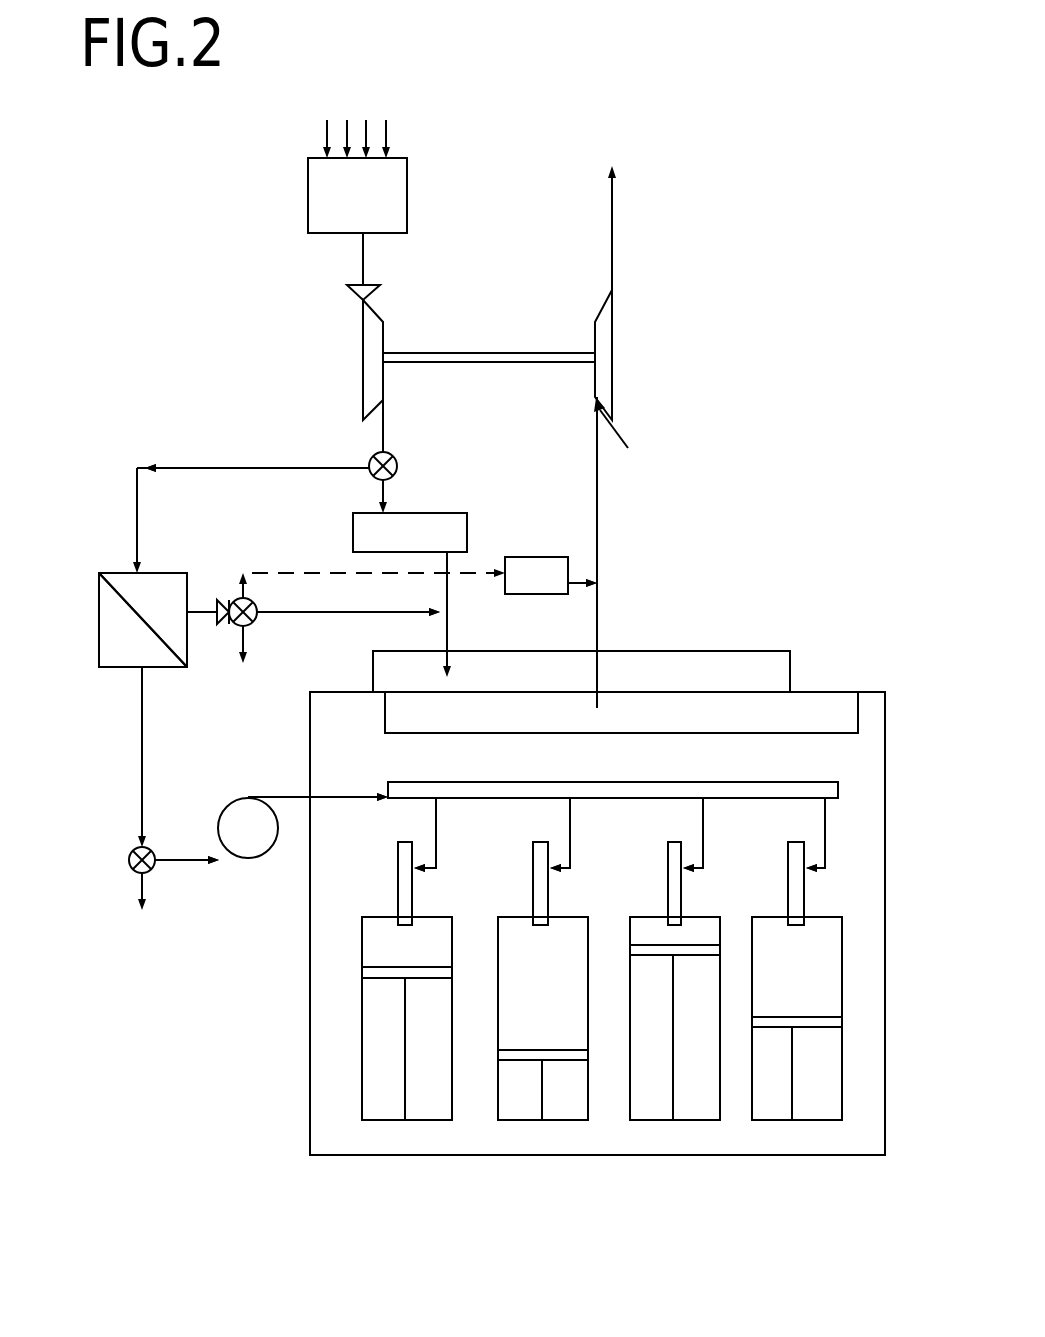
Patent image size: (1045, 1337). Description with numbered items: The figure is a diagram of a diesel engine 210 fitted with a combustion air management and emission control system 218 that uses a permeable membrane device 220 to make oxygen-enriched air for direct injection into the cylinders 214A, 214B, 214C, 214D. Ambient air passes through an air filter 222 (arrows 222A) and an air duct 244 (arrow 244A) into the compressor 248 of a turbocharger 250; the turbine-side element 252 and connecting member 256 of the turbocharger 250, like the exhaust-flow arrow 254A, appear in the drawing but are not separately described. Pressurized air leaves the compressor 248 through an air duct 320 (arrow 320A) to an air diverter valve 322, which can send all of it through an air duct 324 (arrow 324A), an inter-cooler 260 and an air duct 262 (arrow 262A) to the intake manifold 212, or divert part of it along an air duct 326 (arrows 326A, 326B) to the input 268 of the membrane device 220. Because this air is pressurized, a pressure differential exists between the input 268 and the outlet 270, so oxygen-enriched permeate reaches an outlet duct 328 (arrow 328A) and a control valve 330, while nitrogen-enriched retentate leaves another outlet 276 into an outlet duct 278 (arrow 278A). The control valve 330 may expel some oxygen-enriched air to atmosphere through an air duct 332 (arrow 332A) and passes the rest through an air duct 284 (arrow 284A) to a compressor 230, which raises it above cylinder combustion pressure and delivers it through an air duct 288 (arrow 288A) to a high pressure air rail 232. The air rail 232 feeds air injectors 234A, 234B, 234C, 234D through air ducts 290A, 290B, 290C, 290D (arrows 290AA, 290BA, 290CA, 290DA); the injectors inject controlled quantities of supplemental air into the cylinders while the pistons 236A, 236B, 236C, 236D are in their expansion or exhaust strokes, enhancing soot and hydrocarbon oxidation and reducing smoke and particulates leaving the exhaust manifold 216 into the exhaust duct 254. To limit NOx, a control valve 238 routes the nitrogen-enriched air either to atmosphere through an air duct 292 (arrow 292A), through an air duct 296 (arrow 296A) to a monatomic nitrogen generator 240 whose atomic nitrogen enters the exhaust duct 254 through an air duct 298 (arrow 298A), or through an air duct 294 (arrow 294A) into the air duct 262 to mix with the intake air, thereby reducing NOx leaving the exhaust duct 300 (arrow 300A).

The diesel engine 210 is at (311, 1105).
The intake manifold 212 is at (757, 660).
The cylinder 214A is at (432, 1120).
The cylinder 214B is at (572, 1120).
The cylinder 214C is at (695, 1120).
The cylinder 214D is at (812, 1120).
The exhaust manifold 216 is at (812, 706).
The combustion air management and emission control system 218 is at (168, 368).
The permeable membrane device 220 is at (99, 622).
The air filter 222 is at (408, 185).
The arrows 222A is at (386, 120).
The compressor 230 is at (264, 850).
The high pressure air rail 232 is at (405, 792).
The air injector 234A is at (398, 890).
The air injector 234B is at (533, 895).
The air injector 234C is at (668, 896).
The air injector 234D is at (806, 898).
The piston 236A is at (362, 970).
The piston 236B is at (508, 1050).
The piston 236C is at (700, 946).
The piston 236D is at (758, 1020).
The control valve 238 is at (258, 604).
The monatomic nitrogen generator 240 is at (522, 566).
The air duct 244 is at (365, 250).
The arrow 244A is at (349, 290).
The compressor 248 is at (363, 327).
The turbocharger 250 is at (483, 338).
The second lever arm 252 is at (614, 328).
The exhaust duct 254 is at (598, 507).
The arrow direction 254A is at (644, 424).
The connecting rod 256 is at (497, 362).
The inter-cooler 260 is at (412, 528).
The air duct 262 is at (447, 632).
The arrow 262A is at (450, 677).
The input 268 is at (152, 580).
The outlet 270 is at (138, 655).
The outlet 276 is at (190, 655).
The outlet duct 278 is at (207, 612).
The arrow 278A is at (224, 618).
The air duct 284 is at (200, 858).
The arrow 284A is at (238, 862).
The air duct 288 is at (283, 796).
The arrow 288A is at (378, 800).
The air duct 290A is at (438, 815).
The arrow 290AA is at (418, 870).
The air duct 290B is at (572, 815).
The arrow 290BA is at (553, 870).
The air duct 290C is at (705, 815).
The arrow 290CA is at (686, 870).
The air duct 290D is at (838, 815).
The arrow 290DA is at (808, 870).
The air duct 292 is at (250, 638).
The arrow 292A is at (248, 662).
The air duct 294 is at (338, 612).
The arrow 294A is at (449, 615).
The air duct 296 is at (273, 573).
The arrow 296A is at (496, 570).
The air duct 298 is at (577, 578).
The arrow 298A is at (600, 588).
The exhaust duct 300 is at (613, 252).
The arrow 300A is at (613, 172).
The air duct 320 is at (385, 400).
The arrow 320A is at (385, 445).
The air diverter valve 322 is at (369, 462).
The air duct 324 is at (397, 470).
The arrow 324A is at (381, 500).
The air duct 326 is at (197, 468).
The arrow 326A is at (146, 466).
The arrow 326B is at (135, 565).
The outlet duct 328 is at (140, 752).
The arrow 328A is at (140, 842).
The control valve 330 is at (130, 870).
The air duct 332 is at (142, 888).
The arrow 332A is at (143, 912).